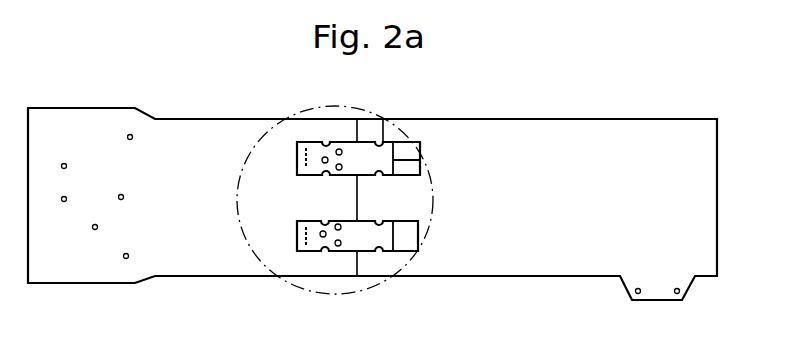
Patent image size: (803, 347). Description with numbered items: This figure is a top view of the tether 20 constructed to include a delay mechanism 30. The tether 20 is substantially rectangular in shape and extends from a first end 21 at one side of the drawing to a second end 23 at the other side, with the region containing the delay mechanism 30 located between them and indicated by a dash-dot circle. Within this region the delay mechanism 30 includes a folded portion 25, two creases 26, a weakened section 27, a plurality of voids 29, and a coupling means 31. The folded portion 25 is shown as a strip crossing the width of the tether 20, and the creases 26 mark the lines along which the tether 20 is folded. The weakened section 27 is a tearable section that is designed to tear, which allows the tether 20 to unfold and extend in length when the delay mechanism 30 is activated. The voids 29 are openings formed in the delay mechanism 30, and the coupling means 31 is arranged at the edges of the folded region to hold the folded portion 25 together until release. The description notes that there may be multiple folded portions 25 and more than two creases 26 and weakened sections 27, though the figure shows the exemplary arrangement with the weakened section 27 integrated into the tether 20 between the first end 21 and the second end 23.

The tether 20 is at (179, 102).
The first end 21 is at (53, 143).
The second end 23 is at (695, 206).
The folded portion 25 is at (368, 130).
The creases 26 is at (420, 160).
The weakened section 27 is at (318, 153).
The voids 29 is at (323, 237).
The delay mechanism 30 is at (236, 167).
The coupling means 31 is at (300, 164).